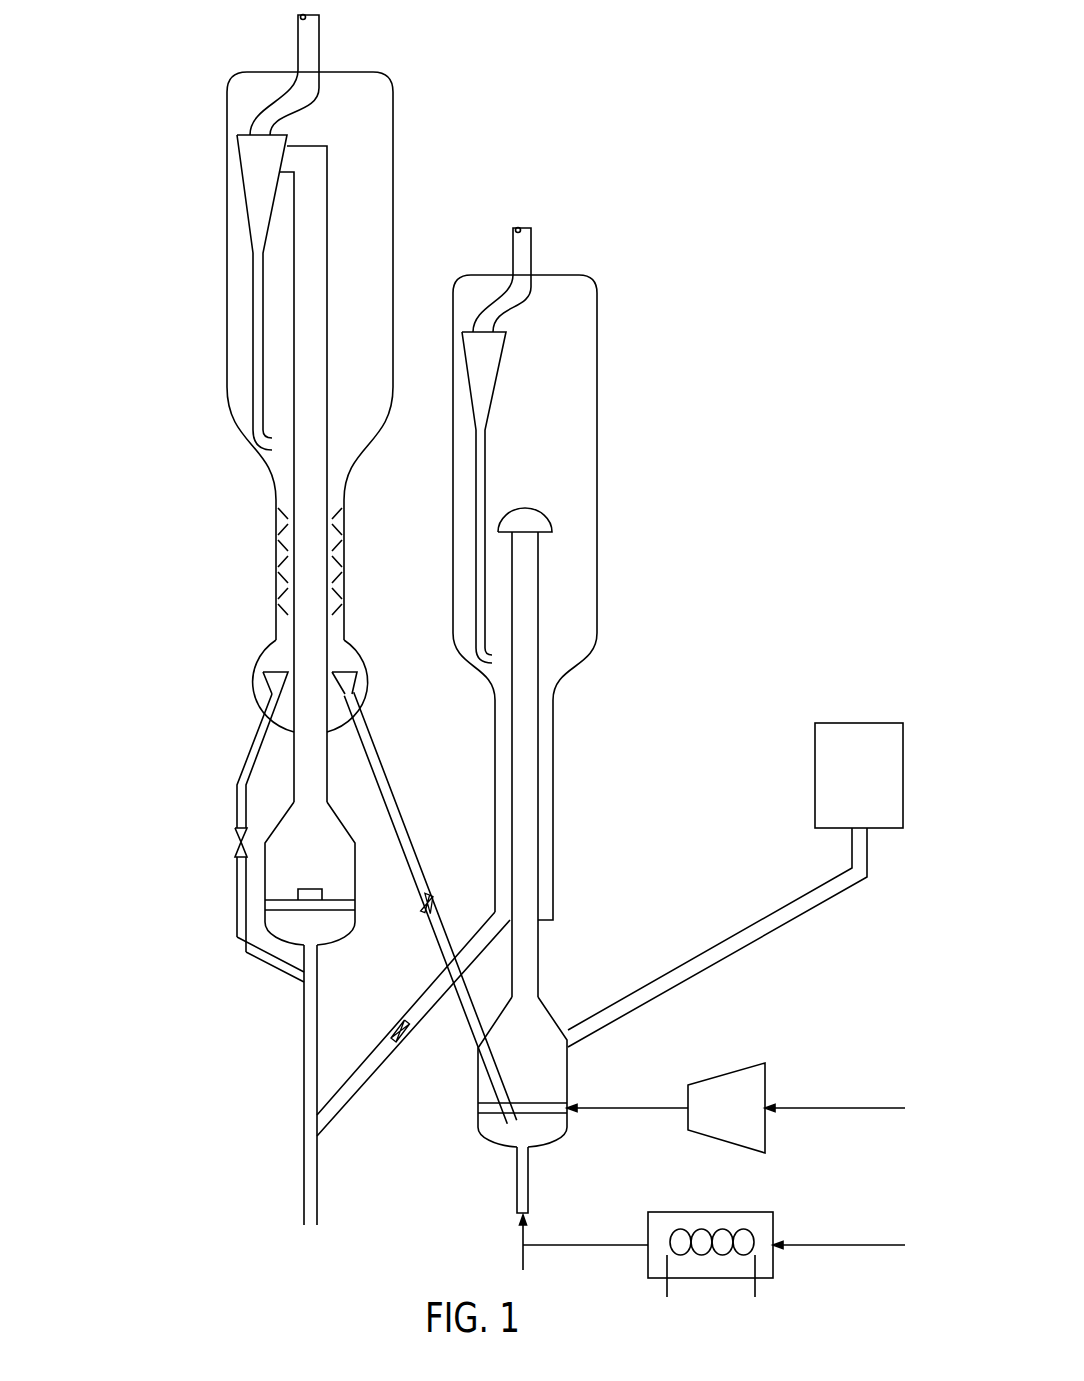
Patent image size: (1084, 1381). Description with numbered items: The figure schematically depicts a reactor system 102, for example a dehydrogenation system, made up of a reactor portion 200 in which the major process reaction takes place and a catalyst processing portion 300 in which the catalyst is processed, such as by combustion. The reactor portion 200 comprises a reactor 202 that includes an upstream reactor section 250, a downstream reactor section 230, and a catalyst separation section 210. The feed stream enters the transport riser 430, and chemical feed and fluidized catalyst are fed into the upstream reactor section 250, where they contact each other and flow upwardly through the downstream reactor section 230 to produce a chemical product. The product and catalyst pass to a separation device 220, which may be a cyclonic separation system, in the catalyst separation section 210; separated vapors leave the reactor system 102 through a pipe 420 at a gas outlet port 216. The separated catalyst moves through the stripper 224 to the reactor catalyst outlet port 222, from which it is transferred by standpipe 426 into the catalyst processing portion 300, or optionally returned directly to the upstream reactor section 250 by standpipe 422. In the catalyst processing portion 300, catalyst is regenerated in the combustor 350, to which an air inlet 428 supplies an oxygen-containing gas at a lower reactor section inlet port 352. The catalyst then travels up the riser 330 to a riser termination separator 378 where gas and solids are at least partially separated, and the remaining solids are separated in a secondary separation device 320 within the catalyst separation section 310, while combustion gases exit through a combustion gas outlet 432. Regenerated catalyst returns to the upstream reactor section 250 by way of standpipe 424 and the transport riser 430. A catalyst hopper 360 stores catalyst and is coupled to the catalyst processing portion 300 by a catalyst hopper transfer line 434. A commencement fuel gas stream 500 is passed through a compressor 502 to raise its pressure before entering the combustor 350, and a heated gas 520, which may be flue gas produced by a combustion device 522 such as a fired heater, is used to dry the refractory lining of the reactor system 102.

The reactor system 102 is at (606, 83).
The reactor portion 200 is at (150, 230).
The reactor 202 is at (375, 872).
The catalyst separation section 210 is at (227, 340).
The gas outlet port 216 is at (307, 66).
The separation device 220 is at (238, 152).
The reactor catalyst outlet port 222 is at (348, 712).
The stripper 224 is at (288, 556).
The downstream reactor section 230 is at (288, 747).
The upstream reactor section 250 is at (265, 862).
The catalyst processing portion 300 is at (654, 531).
The catalyst separation section 310 is at (597, 357).
The secondary separation device 320 is at (477, 424).
The riser 330 is at (538, 970).
The combustor 350 is at (567, 1052).
The lower reactor section inlet port 352 is at (517, 1152).
The catalyst hopper 360 is at (860, 723).
The riser termination separator 378 is at (527, 535).
The pipe 420 is at (320, 43).
The standpipe 422 is at (237, 897).
The standpipe 424 is at (376, 1074).
The standpipe 426 is at (419, 865).
The air inlet 428 is at (529, 1193).
The transport riser 430 is at (317, 965).
The combustion gas outlet 432 is at (531, 240).
The catalyst hopper transfer line 434 is at (764, 930).
The commencement fuel gas stream 500 is at (826, 1107).
The compressor 502 is at (708, 1067).
The heated gas 520 is at (578, 1247).
The combustion device 522 is at (675, 1212).